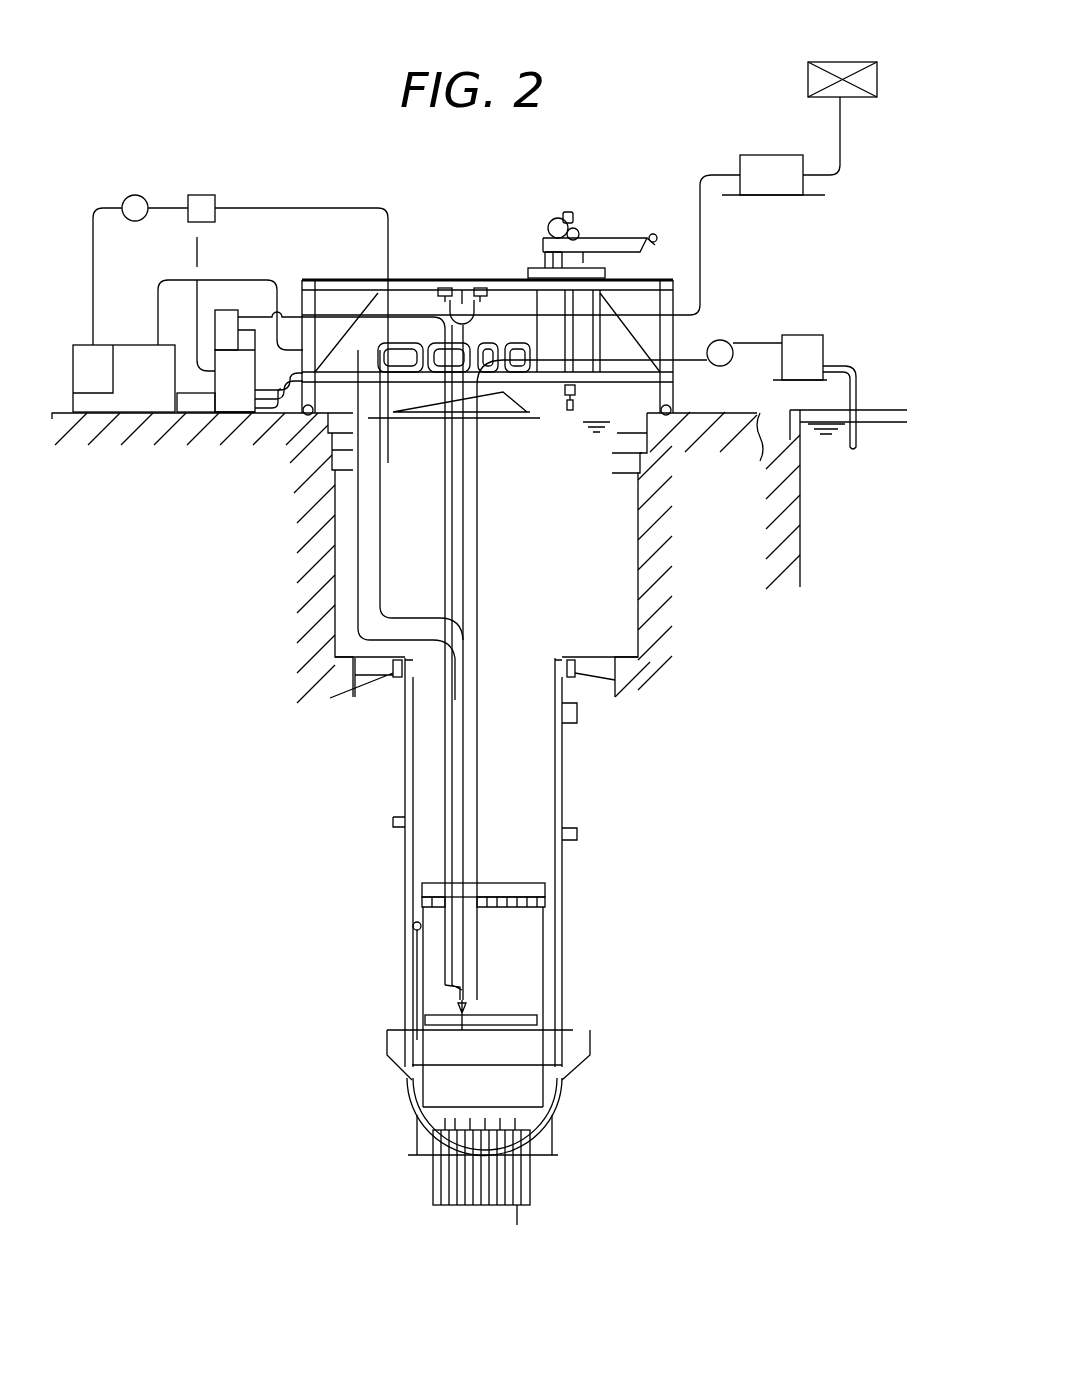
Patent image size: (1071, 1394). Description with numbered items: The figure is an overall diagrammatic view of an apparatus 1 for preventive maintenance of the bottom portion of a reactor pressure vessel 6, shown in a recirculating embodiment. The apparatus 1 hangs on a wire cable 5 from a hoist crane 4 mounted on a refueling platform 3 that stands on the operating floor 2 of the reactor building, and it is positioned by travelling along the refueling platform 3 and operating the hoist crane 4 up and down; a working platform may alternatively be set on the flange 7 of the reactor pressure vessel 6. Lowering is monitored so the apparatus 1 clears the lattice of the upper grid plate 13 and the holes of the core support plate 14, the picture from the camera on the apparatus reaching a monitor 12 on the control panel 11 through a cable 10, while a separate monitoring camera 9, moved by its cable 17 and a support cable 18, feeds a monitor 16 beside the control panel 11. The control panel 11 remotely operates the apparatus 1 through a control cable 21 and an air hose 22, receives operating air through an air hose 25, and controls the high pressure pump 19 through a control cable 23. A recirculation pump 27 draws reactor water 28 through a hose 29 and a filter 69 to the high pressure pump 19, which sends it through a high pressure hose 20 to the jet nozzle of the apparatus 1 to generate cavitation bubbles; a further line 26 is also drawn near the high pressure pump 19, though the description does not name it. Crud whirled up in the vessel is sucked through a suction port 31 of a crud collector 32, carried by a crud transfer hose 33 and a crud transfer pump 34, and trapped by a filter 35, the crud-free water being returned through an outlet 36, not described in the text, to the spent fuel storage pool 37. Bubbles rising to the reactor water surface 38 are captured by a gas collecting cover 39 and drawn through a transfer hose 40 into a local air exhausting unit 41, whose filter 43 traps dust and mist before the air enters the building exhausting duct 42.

The apparatus for preventive maintenance 1 is at (420, 1127).
The operating floor 2 is at (63, 410).
The refueling platform 3 is at (420, 281).
The hoist crane 4 is at (462, 303).
The wire cable 5 is at (463, 508).
The reactor pressure vessel 6 is at (566, 752).
The flange 7 is at (565, 655).
The monitoring camera 9 is at (413, 1092).
The cable 10 is at (257, 403).
The control panel 11 is at (223, 403).
The monitor 12 is at (225, 340).
The upper grid plate 13 is at (530, 885).
The core support plate 14 is at (540, 1018).
The monitor 16 is at (228, 313).
The cable 17 is at (445, 483).
The support cable 18 is at (452, 533).
The high pressure pump 19 is at (127, 403).
The high pressure hose 20 is at (160, 283).
The control cable 21 is at (358, 597).
The air hose 22 is at (273, 400).
The control cable 23 is at (190, 398).
The air hose 25 is at (197, 240).
The feed line 26 is at (93, 235).
The recirculation pump 27 is at (135, 195).
The reactor water 28 is at (620, 508).
The hose 29 is at (288, 207).
The suction port 31 is at (490, 1108).
The crud collector 32 is at (805, 312).
The crud transfer hose 33 is at (477, 560).
The crud transfer pump 34 is at (720, 340).
The filter 35 is at (800, 335).
The outlet pipe 36 is at (853, 368).
The spent fuel storage pool 37 is at (800, 527).
The reactor water surface 38 is at (633, 413).
The gas collecting cover 39 is at (506, 418).
The transfer hose 40 is at (700, 200).
The local air exhausting unit 41 is at (774, 136).
The exhausting duct 42 is at (828, 62).
The filter 43 is at (755, 165).
The filter 69 is at (203, 195).